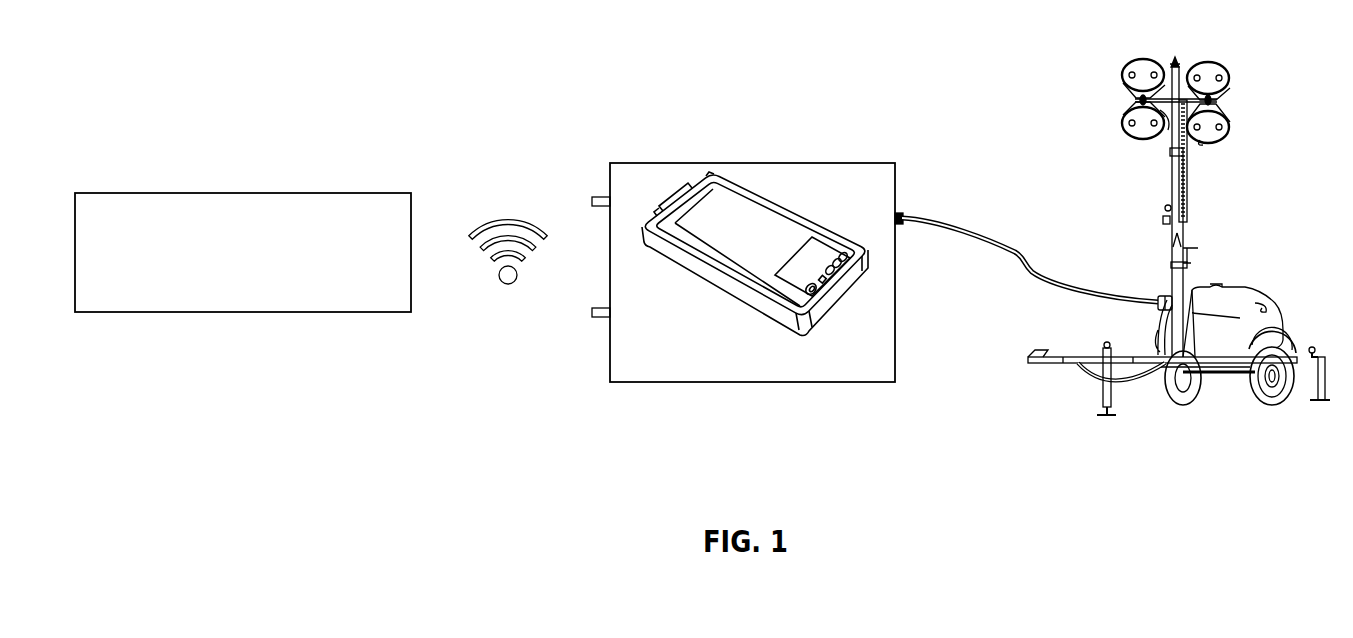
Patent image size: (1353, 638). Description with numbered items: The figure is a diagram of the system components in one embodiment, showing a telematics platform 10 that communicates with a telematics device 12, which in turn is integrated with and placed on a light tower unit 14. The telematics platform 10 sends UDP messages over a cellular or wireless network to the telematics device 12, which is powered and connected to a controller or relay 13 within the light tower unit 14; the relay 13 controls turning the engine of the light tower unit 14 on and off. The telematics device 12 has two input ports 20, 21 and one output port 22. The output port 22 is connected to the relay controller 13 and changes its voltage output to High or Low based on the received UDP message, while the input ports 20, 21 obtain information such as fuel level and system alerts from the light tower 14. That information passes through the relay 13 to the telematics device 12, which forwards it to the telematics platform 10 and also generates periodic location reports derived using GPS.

The telematics platform 10 is at (132, 193).
The telematics device 12 is at (667, 163).
The controller or relay 13 is at (1160, 296).
The light tower unit 14 is at (1230, 330).
The input port 20 is at (600, 197).
The input port 21 is at (600, 317).
The output port 22 is at (900, 212).